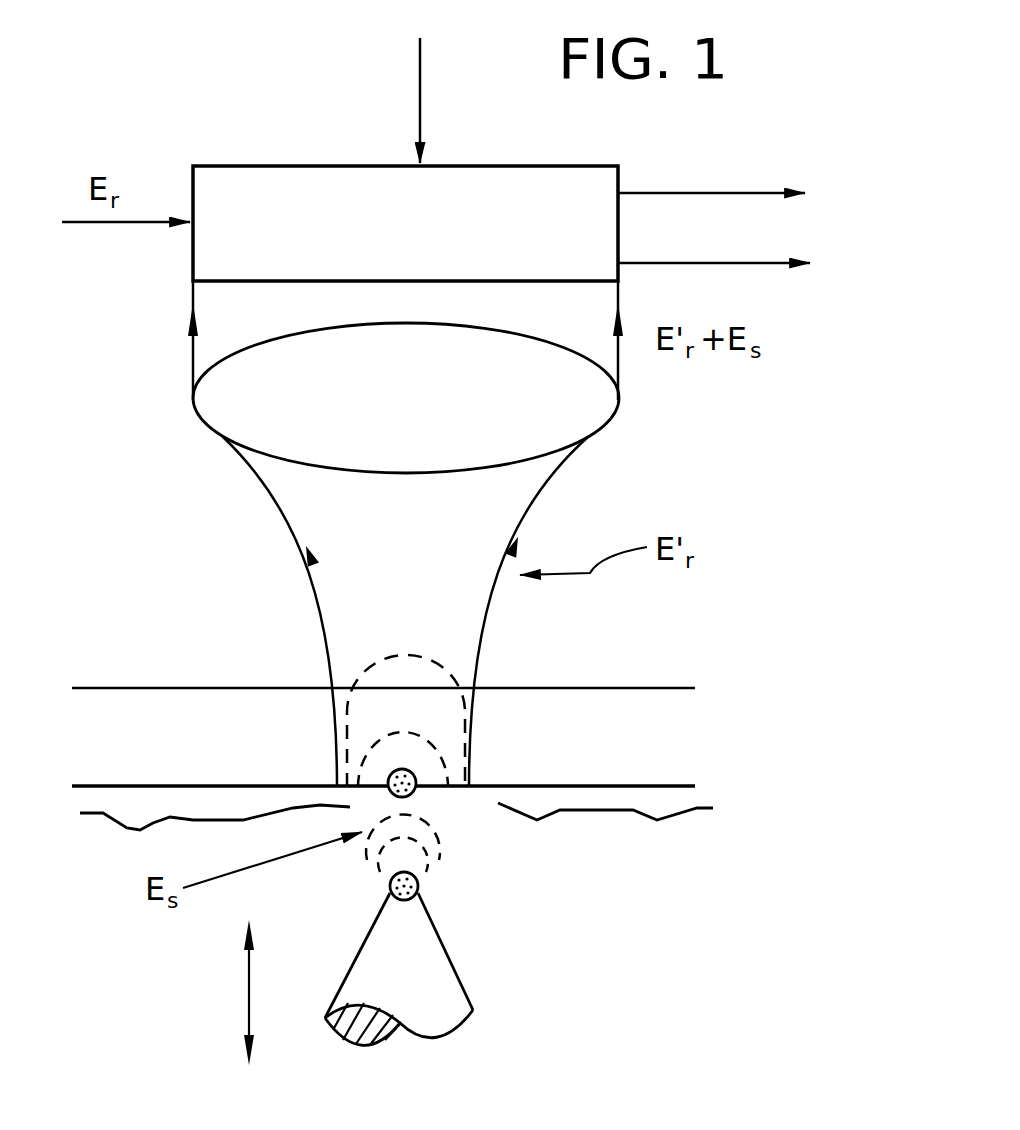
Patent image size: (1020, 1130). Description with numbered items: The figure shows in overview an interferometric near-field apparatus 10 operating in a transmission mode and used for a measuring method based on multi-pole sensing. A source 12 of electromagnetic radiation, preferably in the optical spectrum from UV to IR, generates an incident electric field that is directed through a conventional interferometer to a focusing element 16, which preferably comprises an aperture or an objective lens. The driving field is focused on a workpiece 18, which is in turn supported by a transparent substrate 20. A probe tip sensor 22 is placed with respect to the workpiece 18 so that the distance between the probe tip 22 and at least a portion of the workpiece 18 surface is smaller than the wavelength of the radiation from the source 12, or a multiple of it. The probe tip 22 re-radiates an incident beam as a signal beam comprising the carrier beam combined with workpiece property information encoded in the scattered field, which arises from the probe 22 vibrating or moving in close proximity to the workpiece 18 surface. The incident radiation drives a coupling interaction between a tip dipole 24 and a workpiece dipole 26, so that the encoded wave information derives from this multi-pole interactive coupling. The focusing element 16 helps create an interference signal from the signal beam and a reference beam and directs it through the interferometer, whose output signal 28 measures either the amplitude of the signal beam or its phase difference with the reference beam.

The apparatus 10 is at (207, 112).
The source 12 is at (432, 81).
The focusing element 16 is at (600, 412).
The workpiece 18 is at (680, 829).
The transparent substrate 20 is at (132, 702).
The probe tip sensor 22 is at (450, 998).
The tip dipole 24 is at (446, 898).
The workpiece dipole 26 is at (430, 800).
The output signal 28 is at (820, 175).